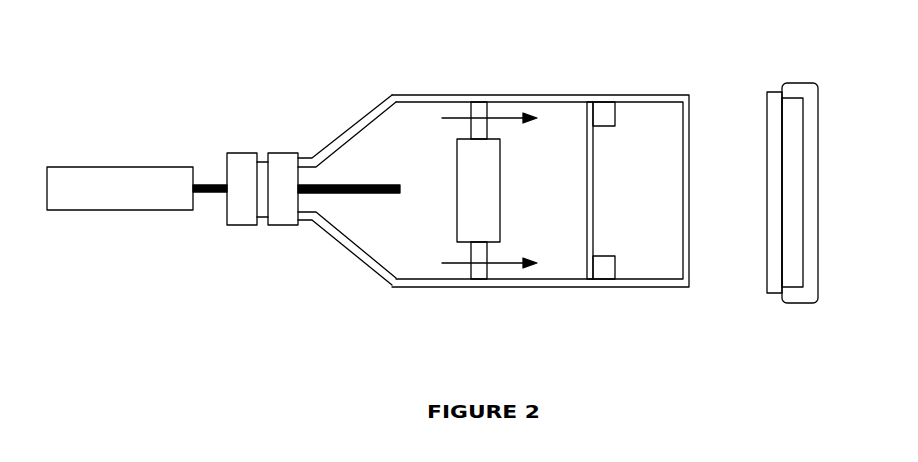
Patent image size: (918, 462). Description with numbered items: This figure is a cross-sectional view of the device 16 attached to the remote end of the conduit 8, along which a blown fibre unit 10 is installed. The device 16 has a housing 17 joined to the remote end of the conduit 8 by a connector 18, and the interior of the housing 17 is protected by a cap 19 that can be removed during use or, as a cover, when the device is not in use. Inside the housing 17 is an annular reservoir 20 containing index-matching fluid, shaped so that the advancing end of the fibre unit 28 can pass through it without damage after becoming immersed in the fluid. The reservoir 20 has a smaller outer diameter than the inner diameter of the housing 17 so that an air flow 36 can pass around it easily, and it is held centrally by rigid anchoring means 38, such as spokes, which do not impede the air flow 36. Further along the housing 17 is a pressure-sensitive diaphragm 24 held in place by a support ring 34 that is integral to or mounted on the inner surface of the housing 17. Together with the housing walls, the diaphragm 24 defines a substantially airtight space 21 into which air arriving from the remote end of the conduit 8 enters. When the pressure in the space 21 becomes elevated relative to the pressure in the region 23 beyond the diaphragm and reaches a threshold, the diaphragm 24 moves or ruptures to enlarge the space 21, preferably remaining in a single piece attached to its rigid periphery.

The remote end of the conduit 8 is at (77, 166).
The blown fibre unit 10 is at (334, 186).
The device 16 is at (559, 143).
The housing 17 is at (533, 95).
The connector 18 is at (280, 152).
The cap 19 is at (817, 218).
The reservoir 20 is at (465, 203).
The airtight space 21 is at (572, 113).
The region beyond the diaphragm 23 is at (664, 268).
The diaphragm 24 is at (586, 228).
The advancing end of the fibre unit 28 is at (398, 186).
The support ring 34 is at (603, 273).
The air flow 36 is at (448, 118).
The anchoring means 38 is at (477, 270).